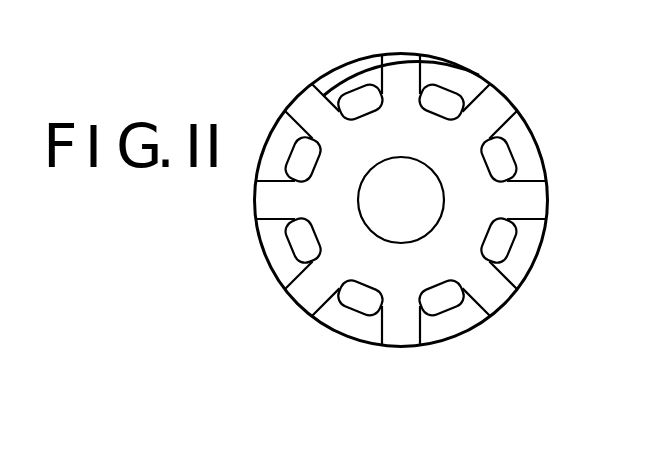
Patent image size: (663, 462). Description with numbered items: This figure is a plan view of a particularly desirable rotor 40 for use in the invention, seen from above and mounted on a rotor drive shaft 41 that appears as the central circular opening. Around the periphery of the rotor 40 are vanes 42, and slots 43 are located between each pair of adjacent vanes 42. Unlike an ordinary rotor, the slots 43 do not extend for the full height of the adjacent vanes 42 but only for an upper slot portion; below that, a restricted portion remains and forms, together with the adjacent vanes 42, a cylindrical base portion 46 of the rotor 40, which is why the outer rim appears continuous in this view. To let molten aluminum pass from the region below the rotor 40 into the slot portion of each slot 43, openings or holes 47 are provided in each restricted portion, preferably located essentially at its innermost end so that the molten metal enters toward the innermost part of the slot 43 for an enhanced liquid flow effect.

The rotor 40 is at (460, 345).
The rotor drive shaft 41 is at (412, 243).
The vanes 42 is at (508, 96).
The slots 43 is at (531, 149).
The cylindrical base portion 46 is at (457, 46).
The openings or holes 47 is at (513, 251).